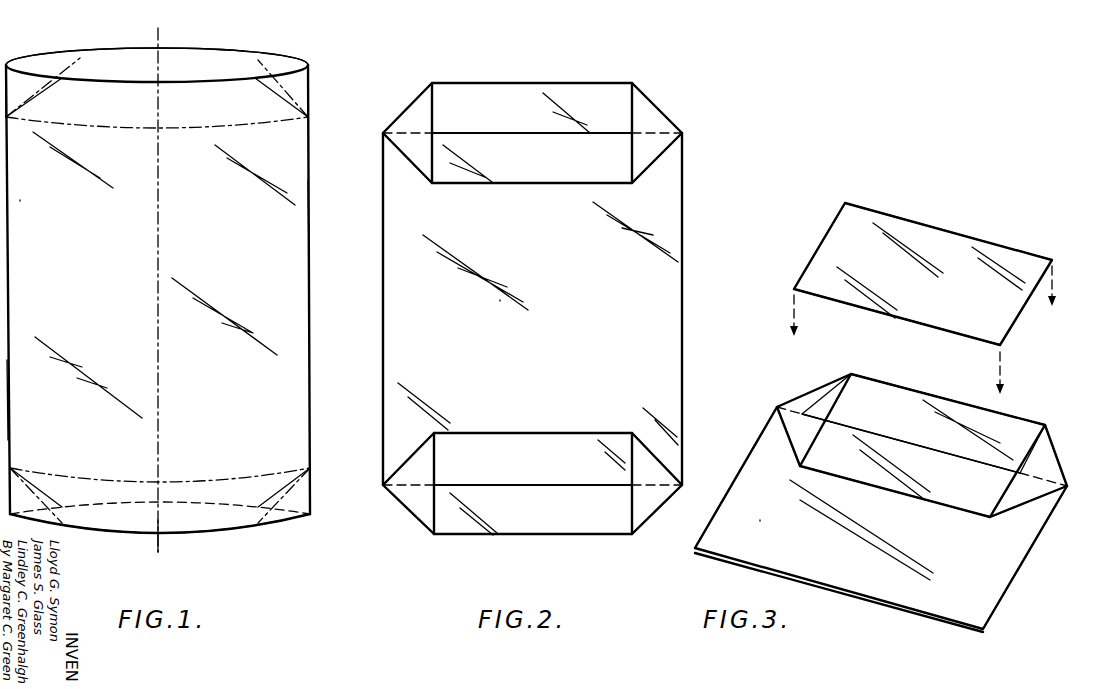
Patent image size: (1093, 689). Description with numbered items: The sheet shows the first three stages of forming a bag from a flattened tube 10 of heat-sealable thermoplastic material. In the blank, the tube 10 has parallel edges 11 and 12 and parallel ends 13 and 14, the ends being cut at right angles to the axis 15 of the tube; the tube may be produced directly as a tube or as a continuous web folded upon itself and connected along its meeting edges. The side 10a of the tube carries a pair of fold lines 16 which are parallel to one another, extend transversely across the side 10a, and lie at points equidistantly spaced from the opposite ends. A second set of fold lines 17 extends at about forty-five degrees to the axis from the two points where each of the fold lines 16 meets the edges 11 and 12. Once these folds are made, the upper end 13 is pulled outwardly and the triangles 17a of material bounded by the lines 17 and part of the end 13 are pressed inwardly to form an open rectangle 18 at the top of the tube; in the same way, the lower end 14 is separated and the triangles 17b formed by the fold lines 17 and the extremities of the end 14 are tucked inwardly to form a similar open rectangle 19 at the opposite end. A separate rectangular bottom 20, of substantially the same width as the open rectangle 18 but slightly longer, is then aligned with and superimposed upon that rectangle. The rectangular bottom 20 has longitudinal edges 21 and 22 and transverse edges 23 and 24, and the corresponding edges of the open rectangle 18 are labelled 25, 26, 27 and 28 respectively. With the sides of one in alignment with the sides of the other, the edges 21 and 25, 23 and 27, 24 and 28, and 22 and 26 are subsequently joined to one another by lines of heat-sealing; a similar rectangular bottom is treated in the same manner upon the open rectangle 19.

In FIG. 1, the flattened tube 10 is at (313, 288).
In FIG. 2, the flattened tube 10 is at (384, 262).
In FIG. 3, the flattened tube 10 is at (996, 614).
In FIG. 1, the side of the tube 10a is at (115, 279).
In FIG. 2, the side of the tube 10a is at (606, 311).
In FIG. 3, the side of the tube 10a is at (804, 550).
In FIG. 1, the edge of the tube 11 is at (8, 402).
In FIG. 2, the edge of the tube 11 is at (383, 401).
In FIG. 3, the edge of the tube 11 is at (732, 481).
In FIG. 1, the edge of the tube 12 is at (311, 230).
In FIG. 2, the edge of the tube 12 is at (683, 310).
In FIG. 3, the edge of the tube 12 is at (1022, 573).
In FIG. 1, the upper end of the tube 13 is at (208, 81).
In FIG. 2, the upper end of the tube 13 is at (572, 83).
In FIG. 1, the lower end of the tube 14 is at (110, 531).
In FIG. 2, the lower end of the tube 14 is at (540, 433).
In FIG. 1, the axis of the tube 15 is at (160, 551).
In FIG. 1, the fold lines 16 is at (195, 128).
In FIG. 2, the fold lines 16 is at (597, 135).
In FIG. 1, the second set of fold lines 17 is at (53, 80).
In FIG. 1, the triangles of material 17a is at (14, 82).
In FIG. 2, the triangles of material 17a is at (414, 118).
In FIG. 3, the triangles of material 17a is at (810, 400).
In FIG. 2, the triangles of material 17b is at (412, 505).
In FIG. 2, the open rectangle 18 is at (502, 120).
In FIG. 3, the open rectangle 18 is at (886, 416).
In FIG. 2, the open rectangle 19 is at (577, 481).
In FIG. 3, the rectangular bottom 20 is at (974, 306).
In FIG. 3, the longitudinal edge of the rectangular bottom 21 is at (938, 229).
In FIG. 3, the longitudinal edge of the rectangular bottom 22 is at (893, 318).
In FIG. 3, the transverse edge of the rectangular bottom 23 is at (820, 248).
In FIG. 3, the transverse edge of the rectangular bottom 24 is at (1008, 335).
In FIG. 3, the edge of the open rectangle 25 is at (925, 393).
In FIG. 3, the edge of the open rectangle 26 is at (922, 500).
In FIG. 3, the edge of the open rectangle 27 is at (800, 456).
In FIG. 3, the edge of the open rectangle 28 is at (998, 505).